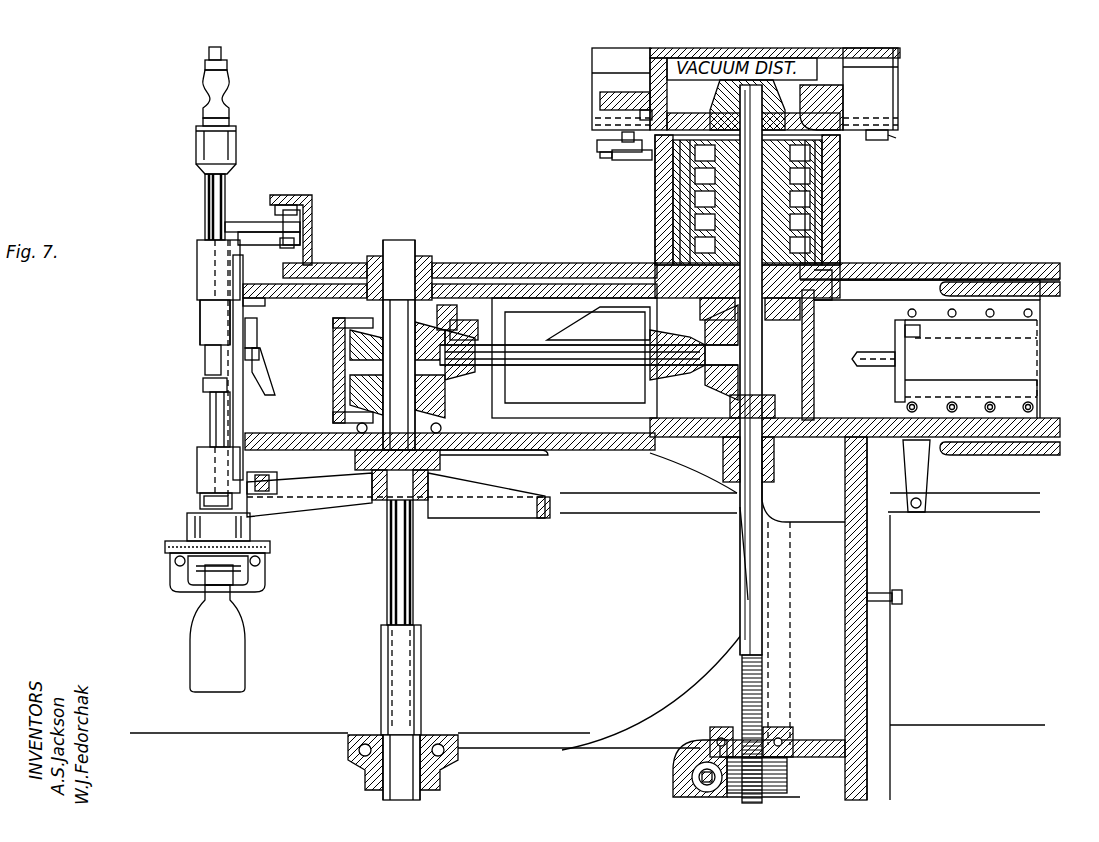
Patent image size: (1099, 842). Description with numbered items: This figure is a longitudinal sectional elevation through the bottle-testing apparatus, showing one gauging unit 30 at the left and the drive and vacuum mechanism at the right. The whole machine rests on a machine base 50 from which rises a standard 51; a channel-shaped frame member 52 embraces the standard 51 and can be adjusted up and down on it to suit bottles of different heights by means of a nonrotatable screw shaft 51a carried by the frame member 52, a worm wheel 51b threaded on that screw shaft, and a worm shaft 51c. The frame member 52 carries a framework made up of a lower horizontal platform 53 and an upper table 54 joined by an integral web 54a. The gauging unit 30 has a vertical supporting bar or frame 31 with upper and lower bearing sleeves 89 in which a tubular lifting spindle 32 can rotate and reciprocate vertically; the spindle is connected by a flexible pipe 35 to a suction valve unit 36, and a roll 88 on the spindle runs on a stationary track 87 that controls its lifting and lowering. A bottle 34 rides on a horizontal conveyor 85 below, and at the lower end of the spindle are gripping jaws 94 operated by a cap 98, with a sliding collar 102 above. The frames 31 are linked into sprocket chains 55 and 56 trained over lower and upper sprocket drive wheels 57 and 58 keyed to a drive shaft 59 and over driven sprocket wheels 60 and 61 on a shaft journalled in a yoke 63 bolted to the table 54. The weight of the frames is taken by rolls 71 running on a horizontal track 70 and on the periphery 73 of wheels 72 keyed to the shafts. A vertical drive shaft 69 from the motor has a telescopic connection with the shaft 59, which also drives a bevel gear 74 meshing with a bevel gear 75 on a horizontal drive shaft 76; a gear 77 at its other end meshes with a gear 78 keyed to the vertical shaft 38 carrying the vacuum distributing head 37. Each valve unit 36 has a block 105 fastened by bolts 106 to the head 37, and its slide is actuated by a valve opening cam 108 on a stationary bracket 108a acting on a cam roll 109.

The gauging unit 30 is at (193, 366).
The supporting bar or frame 31 is at (190, 288).
The lifting spindle 32 is at (220, 440).
The bottle 34 is at (200, 637).
The flexible pipe 35 is at (222, 53).
The suction valve unit 36 is at (592, 92).
The vacuum distributing head 37 is at (702, 120).
The shaft 38 is at (769, 389).
The machine base 50 is at (590, 740).
The standard 51 is at (824, 533).
The screw shaft 51a is at (740, 605).
The worm wheel 51b is at (787, 773).
The worm shaft 51c is at (690, 781).
The frame member 52 is at (893, 641).
The lower horizontal platform 53 is at (884, 418).
The upper table or platform 54 is at (595, 262).
The integral web 54a is at (578, 336).
The sprocket chain 55 is at (270, 458).
The sprocket chain 56 is at (262, 305).
The lower sprocket drive wheel 57 is at (535, 450).
The upper sprocket drive wheel 58 is at (545, 304).
The drive shaft 59 is at (432, 462).
The driven sprocket wheel 60 is at (1045, 440).
The driven sprocket wheel 61 is at (1043, 298).
The yoke 63 is at (895, 353).
The vertical drive shaft 69 is at (400, 690).
The horizontal track 70 is at (632, 493).
The roll 71 is at (270, 492).
The wheel 72 is at (490, 506).
The periphery 73 is at (540, 526).
The bevel gear 74 is at (372, 382).
The bevel gear 75 is at (468, 318).
The horizontal drive shaft 76 is at (605, 368).
The gear 77 is at (738, 362).
The gear 78 is at (813, 334).
The horizontal conveyor 85 is at (308, 733).
The stationary track 87 is at (262, 368).
The roll 88 is at (258, 333).
The bearing sleeve 89 is at (197, 268).
The gripping jaw 94 is at (262, 583).
The cap 98 is at (187, 522).
The collar 102 is at (200, 500).
The block 105 is at (597, 118).
The bolt 106 is at (598, 100).
The valve opening cam 108 is at (597, 146).
The stationary bracket 108a is at (622, 154).
The cam roll 109 is at (633, 138).